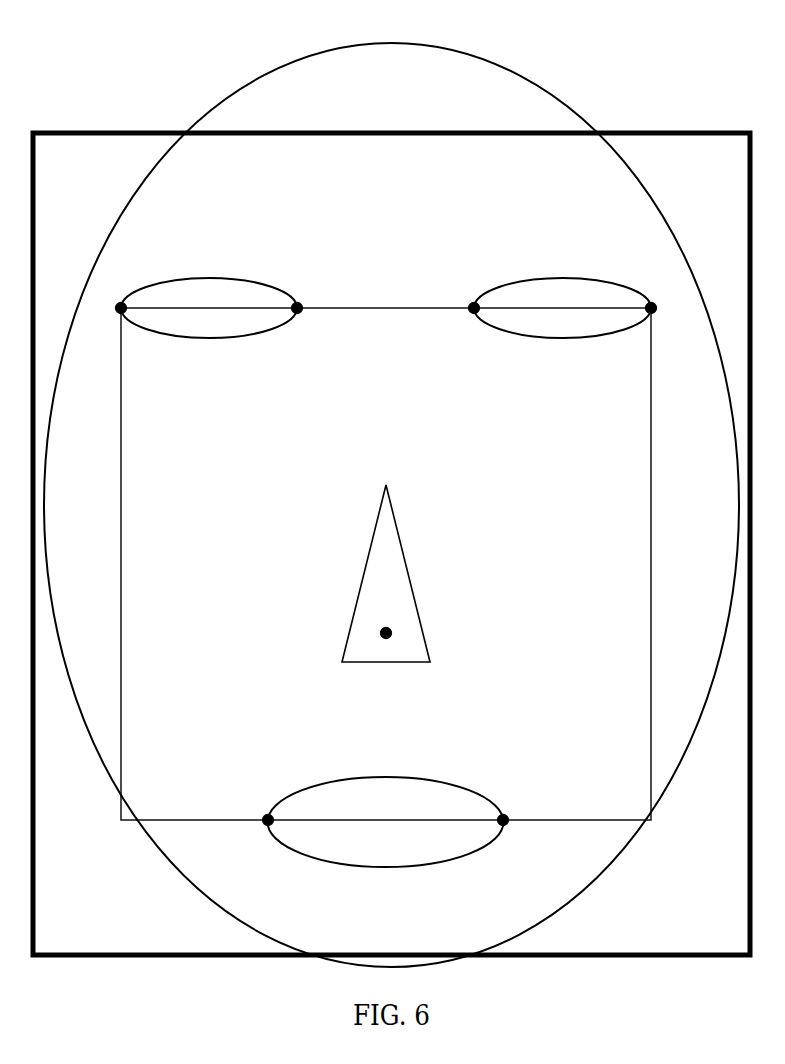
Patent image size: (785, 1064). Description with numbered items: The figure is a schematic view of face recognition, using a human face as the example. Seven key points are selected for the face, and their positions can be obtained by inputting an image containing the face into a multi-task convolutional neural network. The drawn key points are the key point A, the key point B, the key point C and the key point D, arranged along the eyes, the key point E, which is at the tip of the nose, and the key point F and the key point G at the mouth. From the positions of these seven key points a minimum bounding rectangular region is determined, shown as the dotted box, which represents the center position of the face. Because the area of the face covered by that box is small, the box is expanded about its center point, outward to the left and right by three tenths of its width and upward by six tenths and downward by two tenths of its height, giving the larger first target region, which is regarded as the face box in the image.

The key point A is at (122, 289).
The key point B is at (299, 289).
The key point C is at (467, 289).
The key point D is at (663, 289).
The key point E is at (386, 613).
The key point F is at (260, 803).
The key point G is at (514, 803).